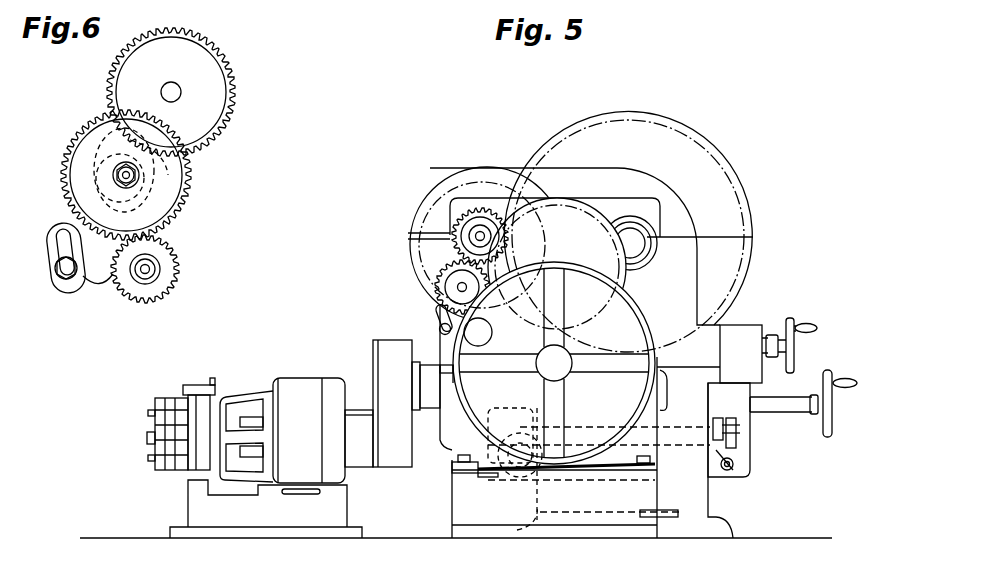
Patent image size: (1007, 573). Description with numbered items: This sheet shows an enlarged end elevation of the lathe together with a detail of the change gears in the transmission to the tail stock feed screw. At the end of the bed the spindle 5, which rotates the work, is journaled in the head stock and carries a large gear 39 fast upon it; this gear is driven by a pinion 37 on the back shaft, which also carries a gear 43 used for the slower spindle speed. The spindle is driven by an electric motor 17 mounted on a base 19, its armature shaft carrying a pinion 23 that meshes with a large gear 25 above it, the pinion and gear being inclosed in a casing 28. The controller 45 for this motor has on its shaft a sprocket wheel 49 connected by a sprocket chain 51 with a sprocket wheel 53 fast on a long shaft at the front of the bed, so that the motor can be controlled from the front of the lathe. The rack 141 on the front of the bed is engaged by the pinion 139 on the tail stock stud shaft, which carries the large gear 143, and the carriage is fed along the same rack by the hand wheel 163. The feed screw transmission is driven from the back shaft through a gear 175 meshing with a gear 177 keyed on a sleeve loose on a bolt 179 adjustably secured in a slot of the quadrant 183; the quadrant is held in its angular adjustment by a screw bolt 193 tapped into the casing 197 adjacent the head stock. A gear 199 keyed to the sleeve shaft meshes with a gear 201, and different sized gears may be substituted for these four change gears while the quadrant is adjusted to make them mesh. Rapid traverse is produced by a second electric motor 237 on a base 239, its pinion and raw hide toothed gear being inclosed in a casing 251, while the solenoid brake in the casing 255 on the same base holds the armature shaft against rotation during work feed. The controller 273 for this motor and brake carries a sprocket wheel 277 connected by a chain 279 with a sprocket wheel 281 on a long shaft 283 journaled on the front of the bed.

In FIG. 5, the spindle 5 is at (645, 252).
In FIG. 5, the electric motor 17 is at (643, 314).
In FIG. 5, the base 19 is at (658, 496).
In FIG. 5, the pinion 23 is at (571, 375).
In FIG. 5, the large gear 25 is at (630, 278).
In FIG. 5, the casing 28 is at (572, 195).
In FIG. 5, the pinion 37 is at (482, 200).
In FIG. 5, the large gear 39 is at (732, 198).
In FIG. 5, the gear 43 is at (545, 228).
In FIG. 5, the controller 45 is at (450, 457).
In FIG. 5, the sprocket wheel 49 is at (517, 440).
In FIG. 5, the sprocket chain 51 is at (700, 453).
In FIG. 5, the sprocket wheel 53 is at (615, 415).
In FIG. 5, the pinion 139 is at (737, 443).
In FIG. 5, the rack 141 is at (737, 423).
In FIG. 5, the large gear 143 is at (737, 410).
In FIG. 5, the hand wheel 163 is at (824, 428).
In FIG. 6, the gear 175 is at (222, 95).
In FIG. 5, the gear 175 is at (458, 223).
In FIG. 6, the gear 177 is at (95, 166).
In FIG. 5, the gear 177 is at (443, 288).
In FIG. 6, the bolt 179 is at (120, 178).
In FIG. 6, the quadrant 183 is at (105, 278).
In FIG. 6, the screw bolt 193 is at (62, 268).
In FIG. 5, the screw bolt 193 is at (437, 327).
In FIG. 5, the casing 197 is at (620, 164).
In FIG. 6, the gear 199 is at (84, 136).
In FIG. 5, the gear 199 is at (443, 274).
In FIG. 6, the gear 201 is at (149, 299).
In FIG. 5, the gear 201 is at (482, 348).
In FIG. 5, the electric motor 237 is at (316, 363).
In FIG. 5, the base 239 is at (340, 511).
In FIG. 5, the casing 251 is at (376, 348).
In FIG. 5, the casing 255 is at (170, 430).
In FIG. 5, the controller 273 is at (507, 487).
In FIG. 5, the sprocket wheel 277 is at (548, 482).
In FIG. 5, the chain 279 is at (722, 474).
In FIG. 5, the sprocket wheel 281 is at (740, 470).
In FIG. 5, the long shaft 283 is at (720, 483).